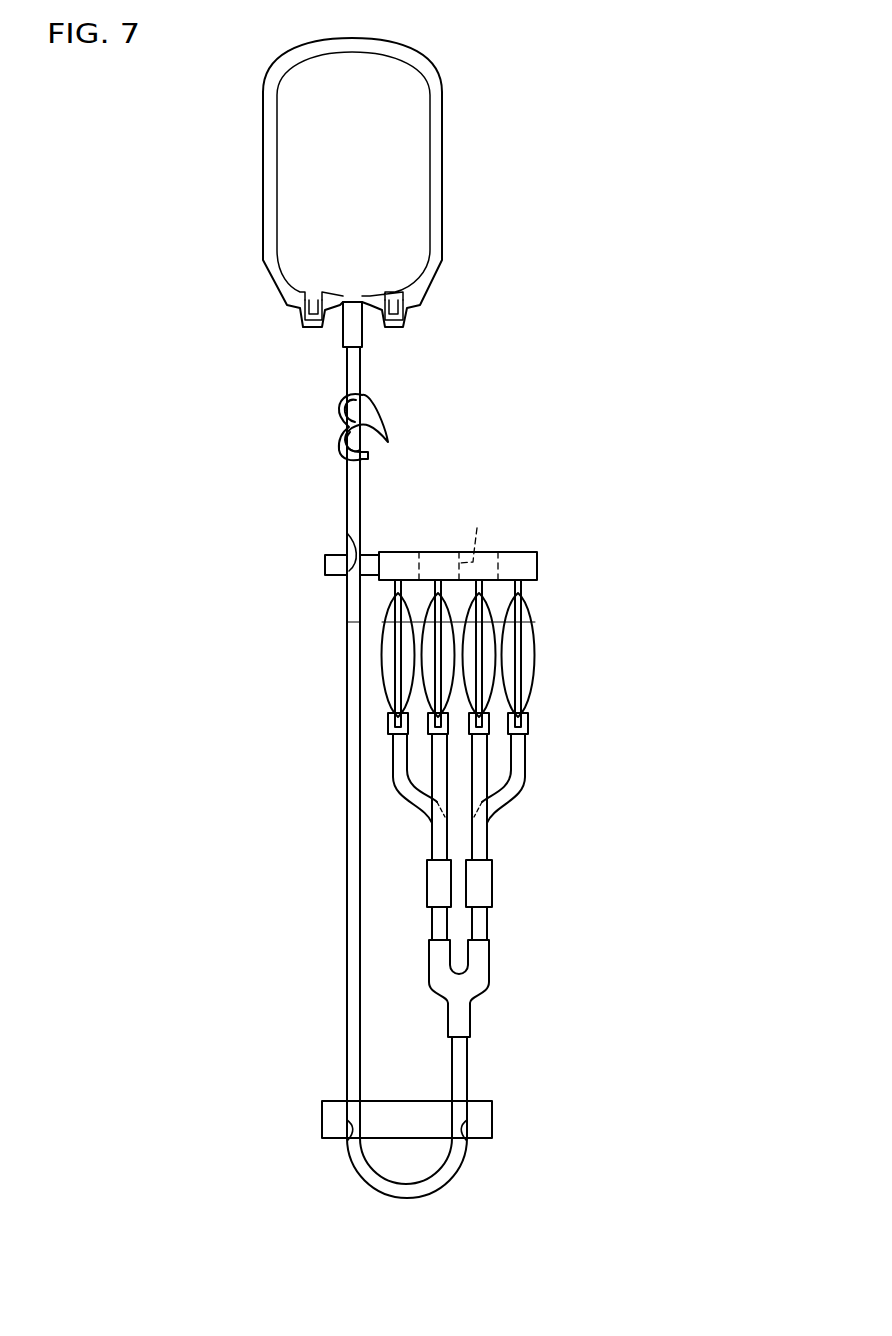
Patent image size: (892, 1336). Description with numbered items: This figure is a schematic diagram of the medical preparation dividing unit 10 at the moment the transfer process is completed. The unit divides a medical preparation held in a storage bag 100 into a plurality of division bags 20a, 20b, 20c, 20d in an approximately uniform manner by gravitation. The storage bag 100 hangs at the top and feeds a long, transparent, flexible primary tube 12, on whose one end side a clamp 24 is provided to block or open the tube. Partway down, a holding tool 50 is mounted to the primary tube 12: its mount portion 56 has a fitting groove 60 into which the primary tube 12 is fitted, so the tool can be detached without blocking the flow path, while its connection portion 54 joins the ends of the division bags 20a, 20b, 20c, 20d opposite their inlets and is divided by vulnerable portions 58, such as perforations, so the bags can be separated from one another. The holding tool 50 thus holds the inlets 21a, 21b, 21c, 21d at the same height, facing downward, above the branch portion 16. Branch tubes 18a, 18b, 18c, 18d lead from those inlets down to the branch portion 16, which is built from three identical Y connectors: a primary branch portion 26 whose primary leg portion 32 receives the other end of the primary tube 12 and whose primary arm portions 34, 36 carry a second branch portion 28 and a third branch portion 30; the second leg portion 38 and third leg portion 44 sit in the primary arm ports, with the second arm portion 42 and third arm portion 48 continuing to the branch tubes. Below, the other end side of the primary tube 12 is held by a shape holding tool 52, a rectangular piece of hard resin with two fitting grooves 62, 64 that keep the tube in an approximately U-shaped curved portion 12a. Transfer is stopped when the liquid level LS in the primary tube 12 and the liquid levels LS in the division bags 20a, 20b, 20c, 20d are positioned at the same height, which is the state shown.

The medical preparation dividing unit 10 is at (146, 173).
The storage bag 100 is at (437, 196).
The primary tube 12 is at (346, 925).
The curved portion 12a is at (405, 1197).
The clamp 24 is at (378, 416).
The holding tool 50 is at (515, 534).
The connection portion 54 is at (530, 571).
The mount portion 56 is at (325, 566).
The vulnerable portion 58 is at (473, 532).
The fitting groove 60 is at (347, 533).
The liquid level LS is at (354, 618).
The division bag 20a is at (523, 683).
The division bag 20b is at (487, 647).
The division bag 20c is at (433, 682).
The division bag 20d is at (388, 649).
The inlet 21a is at (529, 721).
The inlet 21b is at (488, 738).
The inlet 21c is at (430, 738).
The inlet 21d is at (388, 719).
The branch tube 18a is at (526, 777).
The branch tube 18b is at (487, 845).
The branch tube 18c is at (432, 845).
The branch tube 18d is at (393, 777).
The branch portion 16 is at (555, 940).
The primary branch portion 26 is at (478, 993).
The second branch portion 28 is at (492, 870).
The third branch portion 30 is at (427, 870).
The second arm portion 42 is at (492, 894).
The third arm portion 48 is at (427, 894).
The second leg portion 38 is at (487, 926).
The third leg portion 44 is at (432, 926).
The primary arm portion 34 is at (480, 957).
The primary arm portion 36 is at (438, 957).
The primary leg portion 32 is at (458, 1020).
The shape holding tool 52 is at (484, 1109).
The fitting groove 62 is at (346, 1143).
The fitting groove 64 is at (468, 1143).